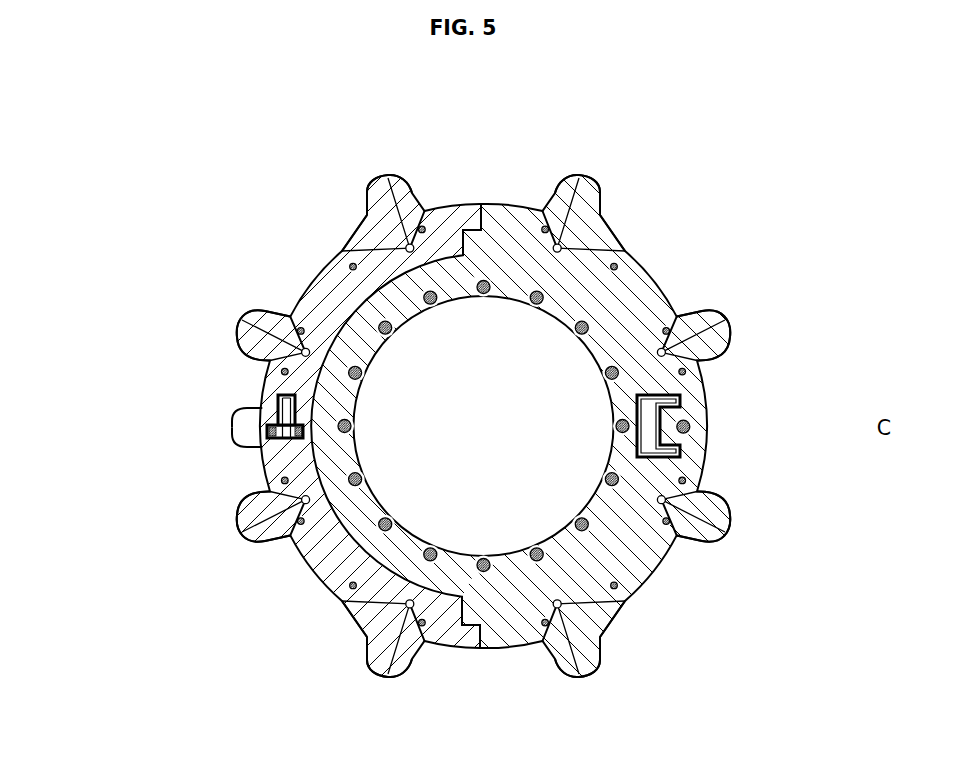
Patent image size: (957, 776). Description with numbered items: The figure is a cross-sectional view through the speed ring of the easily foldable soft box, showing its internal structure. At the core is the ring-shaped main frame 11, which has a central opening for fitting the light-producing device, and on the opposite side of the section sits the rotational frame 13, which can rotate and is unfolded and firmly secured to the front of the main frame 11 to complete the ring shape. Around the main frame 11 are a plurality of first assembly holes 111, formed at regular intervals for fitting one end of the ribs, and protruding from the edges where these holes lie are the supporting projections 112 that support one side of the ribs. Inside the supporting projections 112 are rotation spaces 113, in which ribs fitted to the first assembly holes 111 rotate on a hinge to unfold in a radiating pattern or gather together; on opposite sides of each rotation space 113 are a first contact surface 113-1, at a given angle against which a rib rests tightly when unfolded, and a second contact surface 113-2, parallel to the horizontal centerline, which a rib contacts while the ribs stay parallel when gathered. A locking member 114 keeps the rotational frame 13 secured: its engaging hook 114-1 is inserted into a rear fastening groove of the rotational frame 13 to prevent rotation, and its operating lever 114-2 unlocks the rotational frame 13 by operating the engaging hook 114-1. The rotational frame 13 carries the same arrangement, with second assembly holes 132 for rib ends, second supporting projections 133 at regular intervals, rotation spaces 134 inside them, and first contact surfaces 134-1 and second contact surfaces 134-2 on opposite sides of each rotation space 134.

The main frame 11 is at (692, 412).
The rotational frame 13 is at (310, 290).
The first assembly holes 111 is at (556, 244).
The (1-1)th supporting projections 112 is at (569, 198).
The rotation spaces 113 is at (667, 427).
The first contact surfaces 113-1 is at (591, 183).
The second contact surfaces 113-2 is at (584, 238).
The locking member 114 is at (167, 430).
The engaging hook 114-1 is at (243, 445).
The operating lever 114-2 is at (243, 410).
The second assembly holes 132 is at (411, 244).
The second supporting projections 133 is at (398, 198).
The rotation spaces 134 is at (298, 427).
The first contact surfaces 134-1 is at (376, 183).
The second contact surfaces 134-2 is at (383, 238).